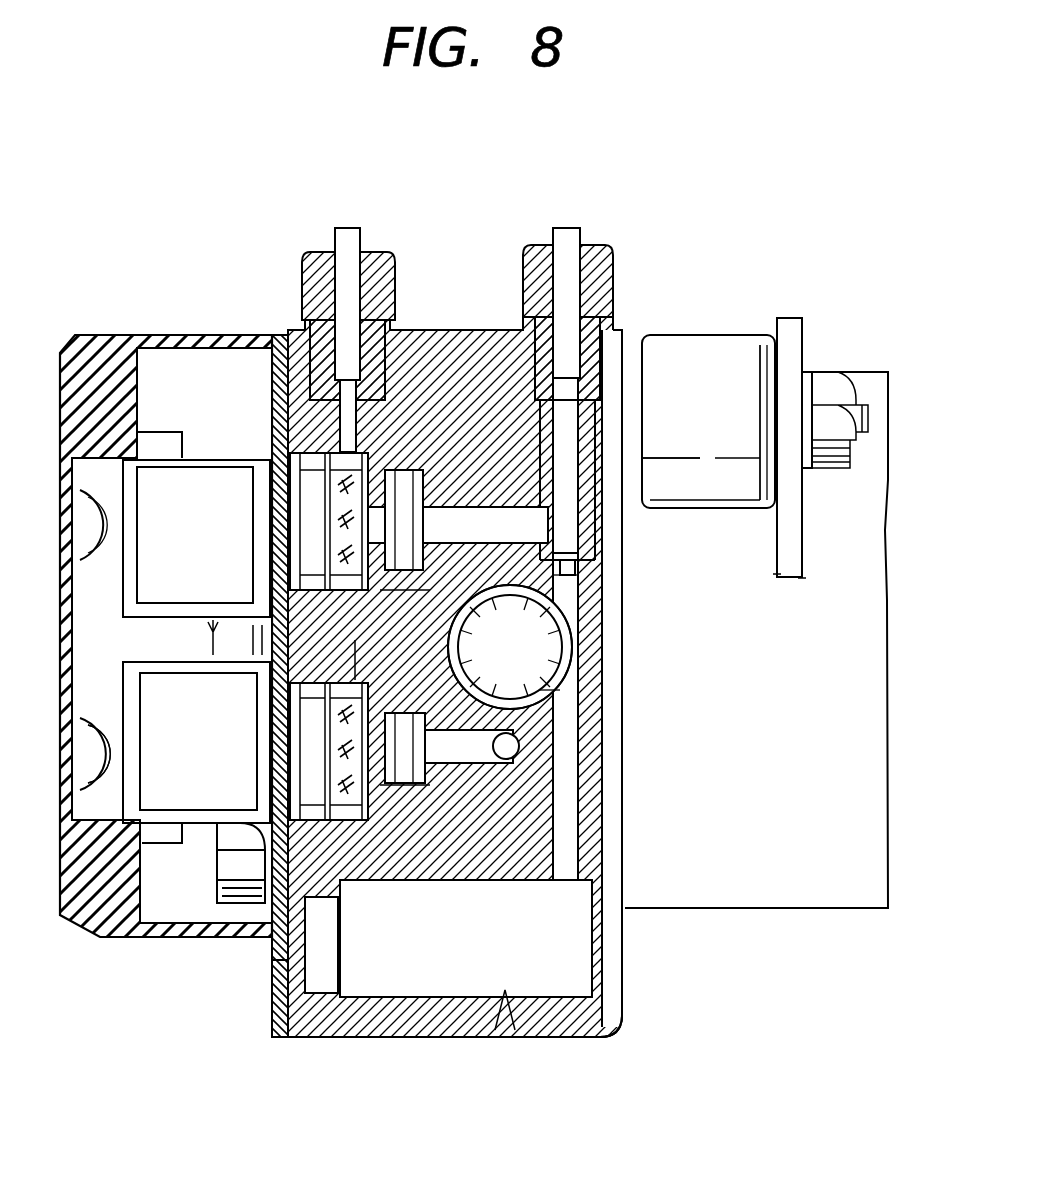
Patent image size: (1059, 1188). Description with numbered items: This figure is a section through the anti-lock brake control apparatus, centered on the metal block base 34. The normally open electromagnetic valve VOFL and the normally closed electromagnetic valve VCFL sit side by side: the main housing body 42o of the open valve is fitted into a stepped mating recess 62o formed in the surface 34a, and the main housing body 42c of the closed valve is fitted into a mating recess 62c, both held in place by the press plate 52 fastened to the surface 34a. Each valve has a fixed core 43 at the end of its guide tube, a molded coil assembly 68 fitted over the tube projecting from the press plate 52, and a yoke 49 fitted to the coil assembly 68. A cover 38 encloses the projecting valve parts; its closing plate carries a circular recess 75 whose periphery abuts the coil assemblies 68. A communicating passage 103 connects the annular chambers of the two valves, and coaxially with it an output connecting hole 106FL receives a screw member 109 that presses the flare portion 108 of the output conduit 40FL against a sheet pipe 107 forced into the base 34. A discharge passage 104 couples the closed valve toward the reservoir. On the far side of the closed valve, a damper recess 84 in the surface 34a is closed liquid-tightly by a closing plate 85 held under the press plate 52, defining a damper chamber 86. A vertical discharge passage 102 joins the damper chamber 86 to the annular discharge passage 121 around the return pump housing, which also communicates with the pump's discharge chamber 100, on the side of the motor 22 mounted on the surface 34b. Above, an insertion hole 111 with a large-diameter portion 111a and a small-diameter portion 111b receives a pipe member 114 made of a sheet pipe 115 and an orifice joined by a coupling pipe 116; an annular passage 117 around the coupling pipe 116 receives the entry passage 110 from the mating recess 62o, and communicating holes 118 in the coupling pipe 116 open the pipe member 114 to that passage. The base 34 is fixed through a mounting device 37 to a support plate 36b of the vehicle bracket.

The cover 38 is at (135, 333).
The sheet pipe 107 is at (290, 335).
The discharge passage 102 is at (568, 785).
The base 34 is at (445, 1025).
The damper chamber 86 is at (473, 947).
The surface of the base 34b is at (625, 975).
The surface of the base 34a is at (232, 925).
The damper recess 84 is at (505, 990).
The closing plate 85 is at (330, 1020).
The press plate 52 is at (270, 1028).
The output connecting hole 106FL is at (312, 305).
The output conduit 40FL is at (340, 230).
The screw member 109 is at (383, 252).
The flare portion 108 is at (388, 370).
The sheet pipe 115 is at (525, 372).
The coupling pipe 116 is at (528, 470).
The communicating hole 118 is at (578, 530).
The insertion hole 111 is at (573, 440).
The large-diameter portion 111a is at (590, 392).
The pipe member 114 is at (577, 412).
The annular passage 117 is at (565, 480).
The small-diameter portion 111b is at (583, 592).
The support plate 36b is at (790, 335).
The mounting device 37 is at (750, 333).
The motor 22 is at (785, 690).
The mating recess 62o is at (372, 452).
The entry passage 110 is at (462, 507).
The normally open electromagnetic valve VOFL is at (395, 592).
The communicating passage 103 is at (358, 650).
The mating recess 62c is at (350, 822).
The discharge passage 104 is at (462, 762).
The normally closed electromagnetic valve VCFL is at (405, 792).
The discharge chamber 100 is at (538, 661).
The annular discharge passage 121 is at (548, 695).
The fixed core 43 is at (272, 510).
The yoke 49 is at (205, 605).
The main housing body 42o is at (262, 445).
The main housing body 42c is at (265, 765).
The recess 75 is at (128, 748).
The coil assembly 68 is at (165, 428).